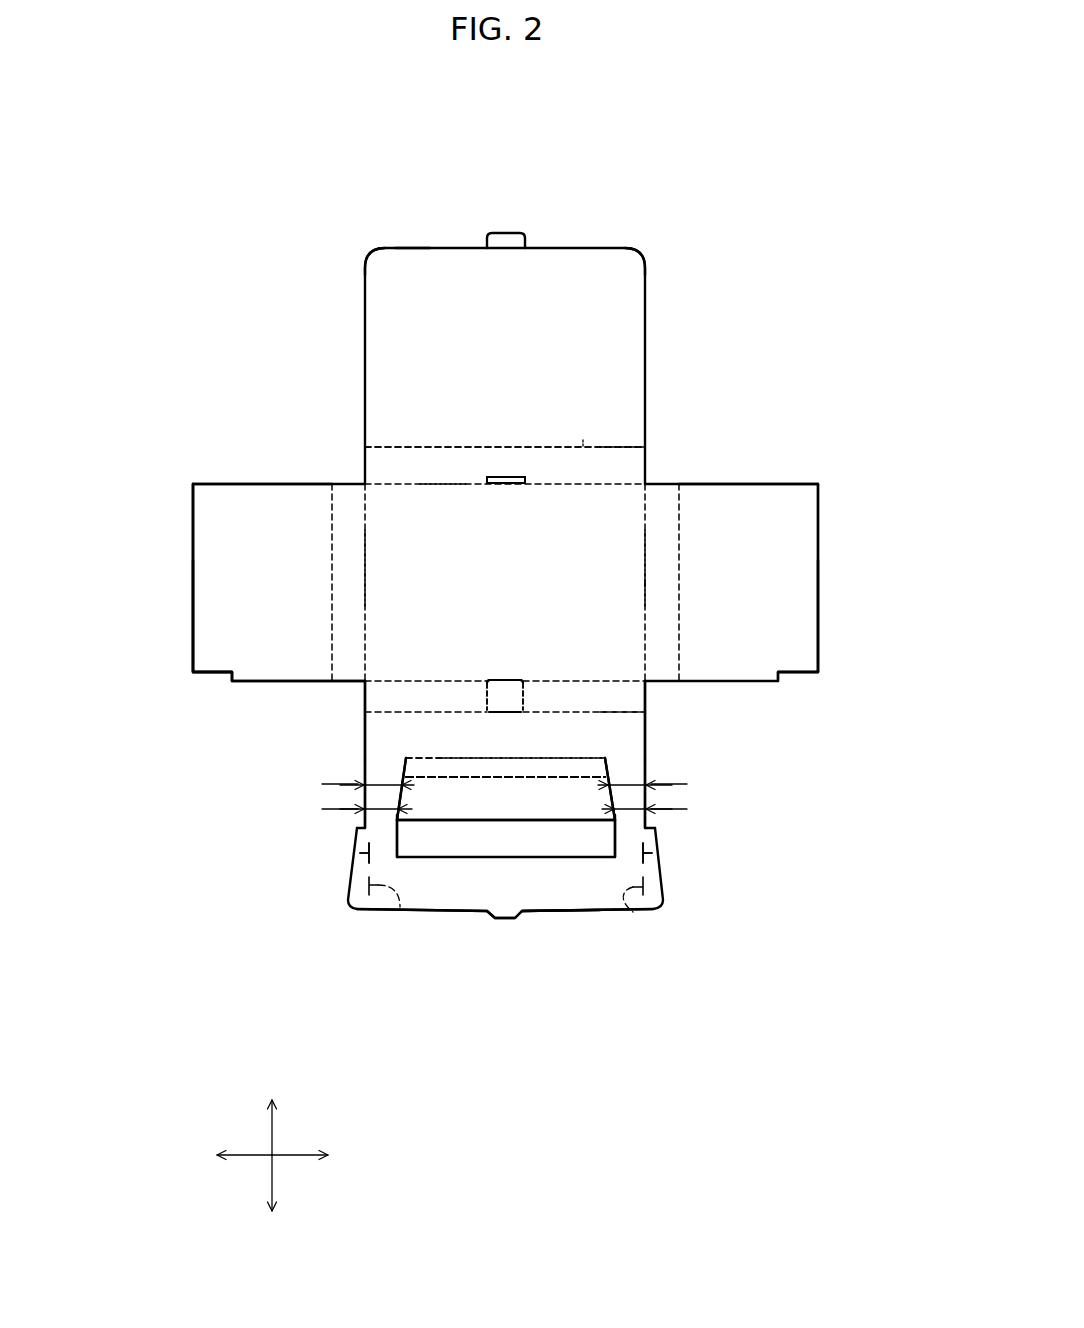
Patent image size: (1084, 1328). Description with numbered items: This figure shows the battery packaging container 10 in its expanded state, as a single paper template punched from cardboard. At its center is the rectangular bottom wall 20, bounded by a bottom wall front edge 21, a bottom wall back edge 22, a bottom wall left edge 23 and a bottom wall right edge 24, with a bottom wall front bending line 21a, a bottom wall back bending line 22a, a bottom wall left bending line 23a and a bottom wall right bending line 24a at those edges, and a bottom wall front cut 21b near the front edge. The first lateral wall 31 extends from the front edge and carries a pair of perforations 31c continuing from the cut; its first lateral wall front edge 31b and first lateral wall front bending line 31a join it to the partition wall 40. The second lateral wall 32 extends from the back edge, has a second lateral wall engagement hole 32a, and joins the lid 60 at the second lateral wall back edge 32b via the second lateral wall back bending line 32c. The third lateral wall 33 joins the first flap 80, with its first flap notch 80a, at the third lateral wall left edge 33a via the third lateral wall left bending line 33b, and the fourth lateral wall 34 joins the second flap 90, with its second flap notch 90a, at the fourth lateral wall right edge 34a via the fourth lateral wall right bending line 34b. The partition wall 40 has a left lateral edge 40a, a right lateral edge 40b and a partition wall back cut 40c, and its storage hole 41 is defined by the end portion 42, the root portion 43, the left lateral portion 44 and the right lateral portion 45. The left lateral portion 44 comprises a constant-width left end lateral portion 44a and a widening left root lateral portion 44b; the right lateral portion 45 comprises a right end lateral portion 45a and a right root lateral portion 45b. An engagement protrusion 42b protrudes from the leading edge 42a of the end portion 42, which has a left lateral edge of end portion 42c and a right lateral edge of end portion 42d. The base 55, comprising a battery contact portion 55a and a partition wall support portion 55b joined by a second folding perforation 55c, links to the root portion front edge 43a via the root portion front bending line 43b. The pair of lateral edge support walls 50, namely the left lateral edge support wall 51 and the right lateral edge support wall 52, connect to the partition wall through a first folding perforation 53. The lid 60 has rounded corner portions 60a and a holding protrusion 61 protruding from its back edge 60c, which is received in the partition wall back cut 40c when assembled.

The battery packaging container 10 is at (242, 191).
The bottom wall 20 is at (628, 520).
The bottom wall front edge 21 is at (559, 670).
The bottom wall front bending line 21a is at (618, 680).
The bottom wall front cut 21b is at (507, 680).
The bottom wall back edge 22 is at (430, 495).
The bottom wall back bending line 22a is at (468, 482).
The bottom wall left edge 23 is at (380, 551).
The bottom wall left bending line 23a is at (367, 596).
The bottom wall right edge 24 is at (626, 553).
The bottom wall right bending line 24a is at (645, 583).
The first lateral wall 31 is at (353, 694).
The first lateral wall front bending line 31a is at (643, 700).
The first lateral wall front edge 31b is at (630, 718).
The perforations 31c is at (486, 690).
The second lateral wall 32 is at (352, 460).
The second lateral wall engagement hole 32a is at (507, 477).
The second lateral wall back edge 32b is at (625, 432).
The second lateral wall back bending line 32c is at (583, 447).
The third lateral wall 33 is at (308, 509).
The third lateral wall left edge 33a is at (311, 555).
The third lateral wall left bending line 33b is at (330, 528).
The fourth lateral wall 34 is at (694, 518).
The fourth lateral wall right edge 34a is at (696, 584).
The fourth lateral wall right bending line 34b is at (680, 550).
The partition wall 40 is at (445, 892).
The left lateral edge 40a is at (365, 727).
The right lateral edge 40b is at (645, 705).
The partition wall back cut 40c is at (505, 745).
The storage hole 41 is at (583, 850).
The end portion 42 is at (450, 897).
The leading edge 42a is at (550, 912).
The engagement protrusion 42b is at (502, 916).
The left lateral edge of end portion 42c is at (400, 907).
The right lateral edge of end portion 42d is at (635, 912).
The root portion 43 is at (615, 760).
The root portion front edge 43a is at (470, 738).
The root portion front bending line 43b is at (431, 759).
The left lateral portion 44 is at (123, 795).
The left end lateral portion 44a is at (382, 823).
The left root lateral portion 44b is at (378, 765).
The right lateral portion 45 is at (838, 783).
The right end lateral portion 45a is at (630, 823).
The right root lateral portion 45b is at (630, 762).
The lateral edge support walls 50 is at (522, 901).
The left lateral edge support wall 51 is at (347, 900).
The right lateral edge support wall 52 is at (663, 898).
The first folding perforation 53 is at (360, 853).
The base 55 is at (469, 831).
The battery contact portion 55a is at (540, 757).
The partition wall support portion 55b is at (523, 815).
The second folding perforation 55c is at (463, 777).
The lid 60 is at (602, 206).
The corner portions 60a is at (378, 248).
The back edge 60c is at (413, 247).
The holding protrusion 61 is at (507, 240).
The first flap 80 is at (140, 603).
The first flap notch 80a is at (213, 675).
The second flap 90 is at (855, 625).
The second flap notch 90a is at (800, 676).